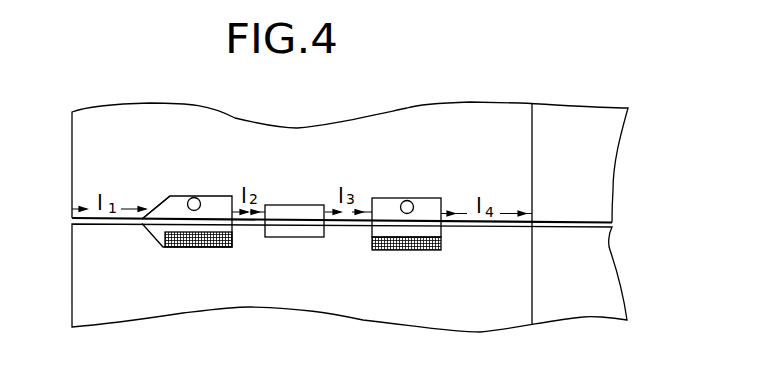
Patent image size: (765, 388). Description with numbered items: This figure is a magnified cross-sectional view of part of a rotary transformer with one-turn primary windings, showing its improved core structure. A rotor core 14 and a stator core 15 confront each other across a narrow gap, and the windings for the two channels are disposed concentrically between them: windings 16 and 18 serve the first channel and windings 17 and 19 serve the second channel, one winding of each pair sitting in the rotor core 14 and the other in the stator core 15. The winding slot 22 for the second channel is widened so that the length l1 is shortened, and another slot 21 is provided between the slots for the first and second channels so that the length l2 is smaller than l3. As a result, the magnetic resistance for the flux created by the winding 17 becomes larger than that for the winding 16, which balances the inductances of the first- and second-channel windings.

The rotor core 14 is at (72, 152).
The stator core 15 is at (183, 313).
The winding for the first channel 16 is at (408, 201).
The winding for the second channel 17 is at (203, 196).
The winding for the first channel 18 is at (203, 243).
The winding for the second channel 19 is at (412, 248).
The slot 21 is at (298, 237).
The winding slot for the second channel 22 is at (170, 196).